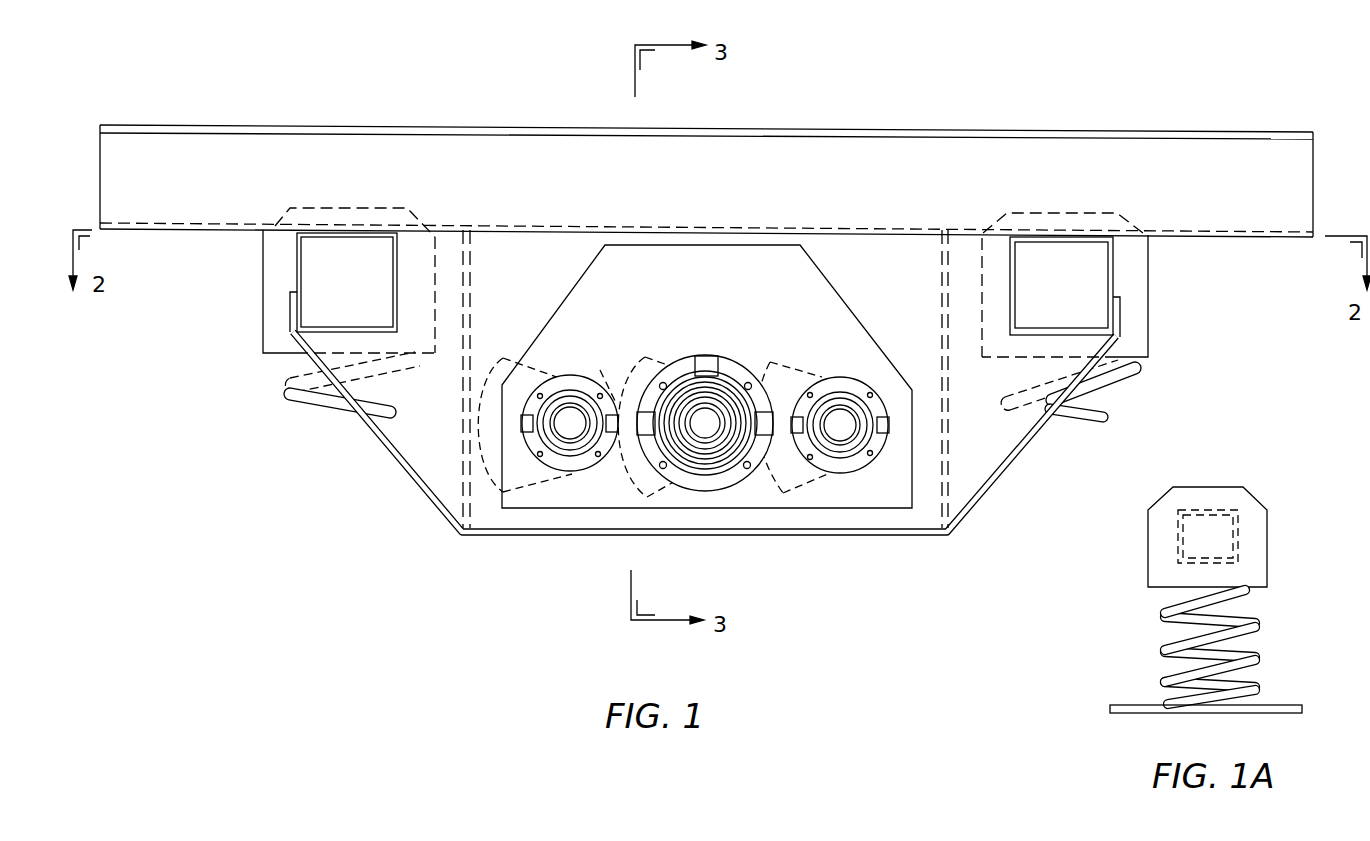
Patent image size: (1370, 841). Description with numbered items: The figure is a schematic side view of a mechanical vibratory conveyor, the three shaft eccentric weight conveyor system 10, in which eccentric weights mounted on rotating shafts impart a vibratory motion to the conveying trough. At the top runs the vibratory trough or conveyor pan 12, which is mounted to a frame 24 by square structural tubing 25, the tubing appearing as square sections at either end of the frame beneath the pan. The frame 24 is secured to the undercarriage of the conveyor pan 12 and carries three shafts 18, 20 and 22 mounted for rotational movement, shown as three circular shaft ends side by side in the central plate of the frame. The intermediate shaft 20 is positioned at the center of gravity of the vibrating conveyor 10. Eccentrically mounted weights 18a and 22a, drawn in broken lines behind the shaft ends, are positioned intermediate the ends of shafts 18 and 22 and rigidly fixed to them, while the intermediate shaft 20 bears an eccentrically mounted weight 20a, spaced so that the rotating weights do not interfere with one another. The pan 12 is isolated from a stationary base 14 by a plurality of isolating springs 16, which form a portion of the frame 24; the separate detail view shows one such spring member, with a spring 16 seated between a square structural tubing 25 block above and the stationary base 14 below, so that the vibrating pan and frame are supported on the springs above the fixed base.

In FIG. 1, the three shaft eccentric weight conveyor system 10 is at (955, 98).
In FIG. 1, the conveyor pan 12 is at (1138, 132).
In FIG. 1A, the stationary base 14 is at (1290, 705).
In FIG. 1, the isolating springs 16 is at (328, 410).
In FIG. 1A, the isolating springs 16 is at (1257, 623).
In FIG. 1, the shaft 18 is at (846, 437).
In FIG. 1, the eccentrically mounted weight 18a is at (797, 363).
In FIG. 1, the intermediate shaft 20 is at (712, 432).
In FIG. 1, the eccentrically mounted weight 20a is at (645, 357).
In FIG. 1, the shaft 22 is at (568, 433).
In FIG. 1, the eccentrically mounted weight 22a is at (455, 510).
In FIG. 1, the frame 24 is at (416, 480).
In FIG. 1, the square structural tubing 25 is at (297, 272).
In FIG. 1A, the square structural tubing 25 is at (1240, 523).